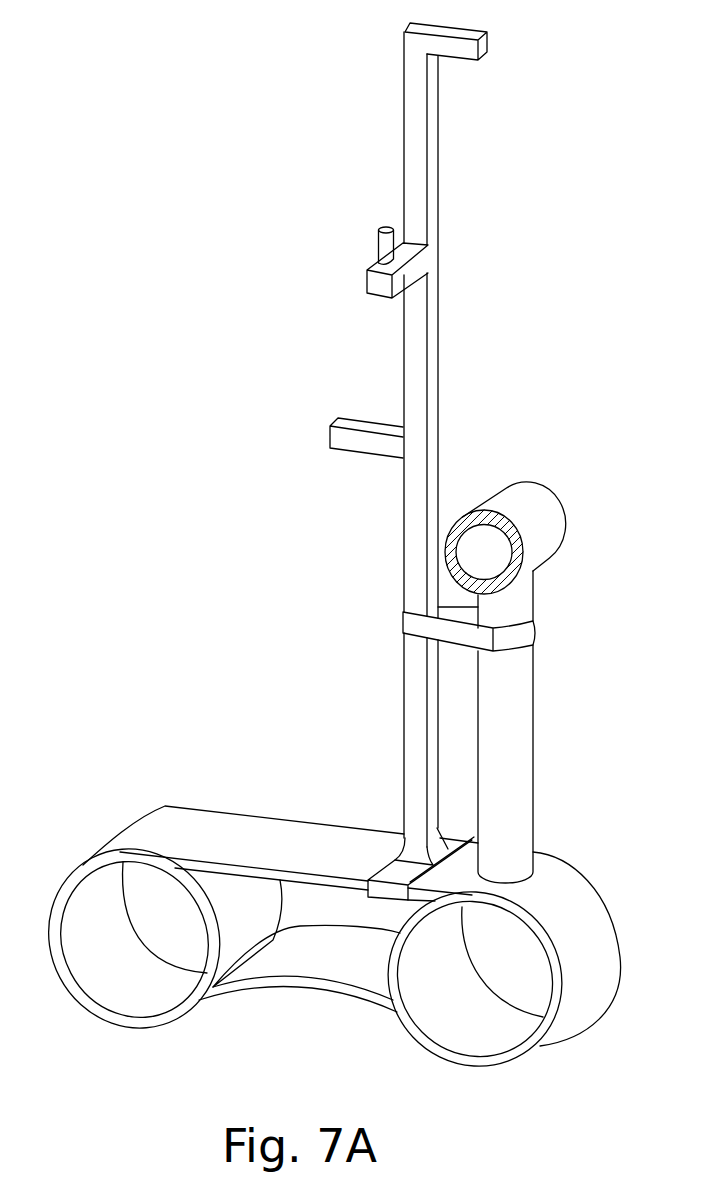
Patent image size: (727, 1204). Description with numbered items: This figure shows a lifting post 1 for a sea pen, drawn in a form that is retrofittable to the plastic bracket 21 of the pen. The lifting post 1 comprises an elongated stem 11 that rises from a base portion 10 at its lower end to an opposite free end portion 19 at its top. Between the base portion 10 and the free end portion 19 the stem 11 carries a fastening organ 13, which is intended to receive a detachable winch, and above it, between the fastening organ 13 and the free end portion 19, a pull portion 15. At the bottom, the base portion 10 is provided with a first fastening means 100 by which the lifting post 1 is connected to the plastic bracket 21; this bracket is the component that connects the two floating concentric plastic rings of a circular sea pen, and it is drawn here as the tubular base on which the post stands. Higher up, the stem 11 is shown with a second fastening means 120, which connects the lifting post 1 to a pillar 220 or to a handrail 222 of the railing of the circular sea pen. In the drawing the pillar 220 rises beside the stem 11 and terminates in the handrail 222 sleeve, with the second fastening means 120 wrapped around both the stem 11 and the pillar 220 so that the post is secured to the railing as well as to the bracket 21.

The lifting post 1 is at (560, 178).
The base portion 10 is at (338, 448).
The elongated stem 11 is at (413, 382).
The fastening organ 13 is at (358, 437).
The pull portion 15 is at (404, 252).
The free end portion 19 is at (440, 42).
The plastic bracket 21 is at (203, 837).
The first fastening means 100 is at (413, 842).
The second fastening means 120 is at (453, 632).
The pillar 220 is at (528, 745).
The handrail 222 is at (528, 517).